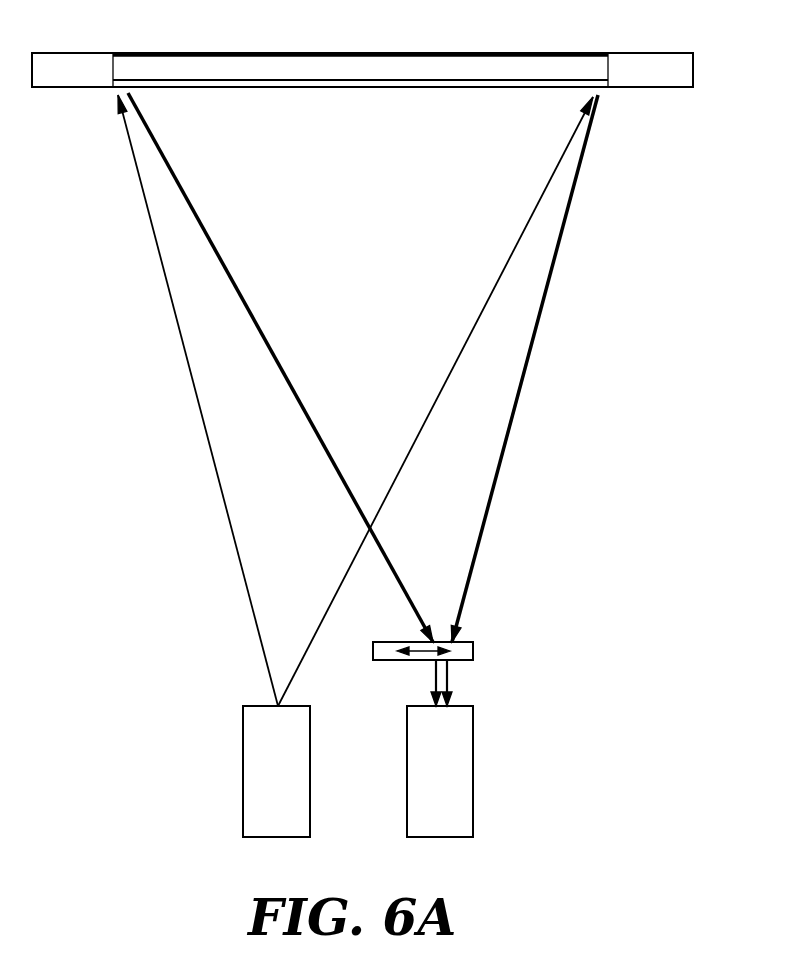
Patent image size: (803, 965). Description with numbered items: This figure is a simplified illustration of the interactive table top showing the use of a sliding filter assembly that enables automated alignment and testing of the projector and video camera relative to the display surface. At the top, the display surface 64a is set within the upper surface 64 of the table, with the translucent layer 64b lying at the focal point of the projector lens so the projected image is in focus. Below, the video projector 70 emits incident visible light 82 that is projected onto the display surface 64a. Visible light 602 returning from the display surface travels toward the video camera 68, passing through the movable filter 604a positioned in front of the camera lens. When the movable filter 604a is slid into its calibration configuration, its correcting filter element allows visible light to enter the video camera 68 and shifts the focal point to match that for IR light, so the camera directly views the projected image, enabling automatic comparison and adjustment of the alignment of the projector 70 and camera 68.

The upper surface 64 is at (693, 70).
The display surface 64a is at (223, 52).
The translucent layer 64b is at (337, 87).
The incident visible light 82 is at (204, 432).
The visible light 602 is at (232, 268).
The movable filter 604a is at (473, 655).
The video camera 68 is at (473, 750).
The video projector 70 is at (243, 750).